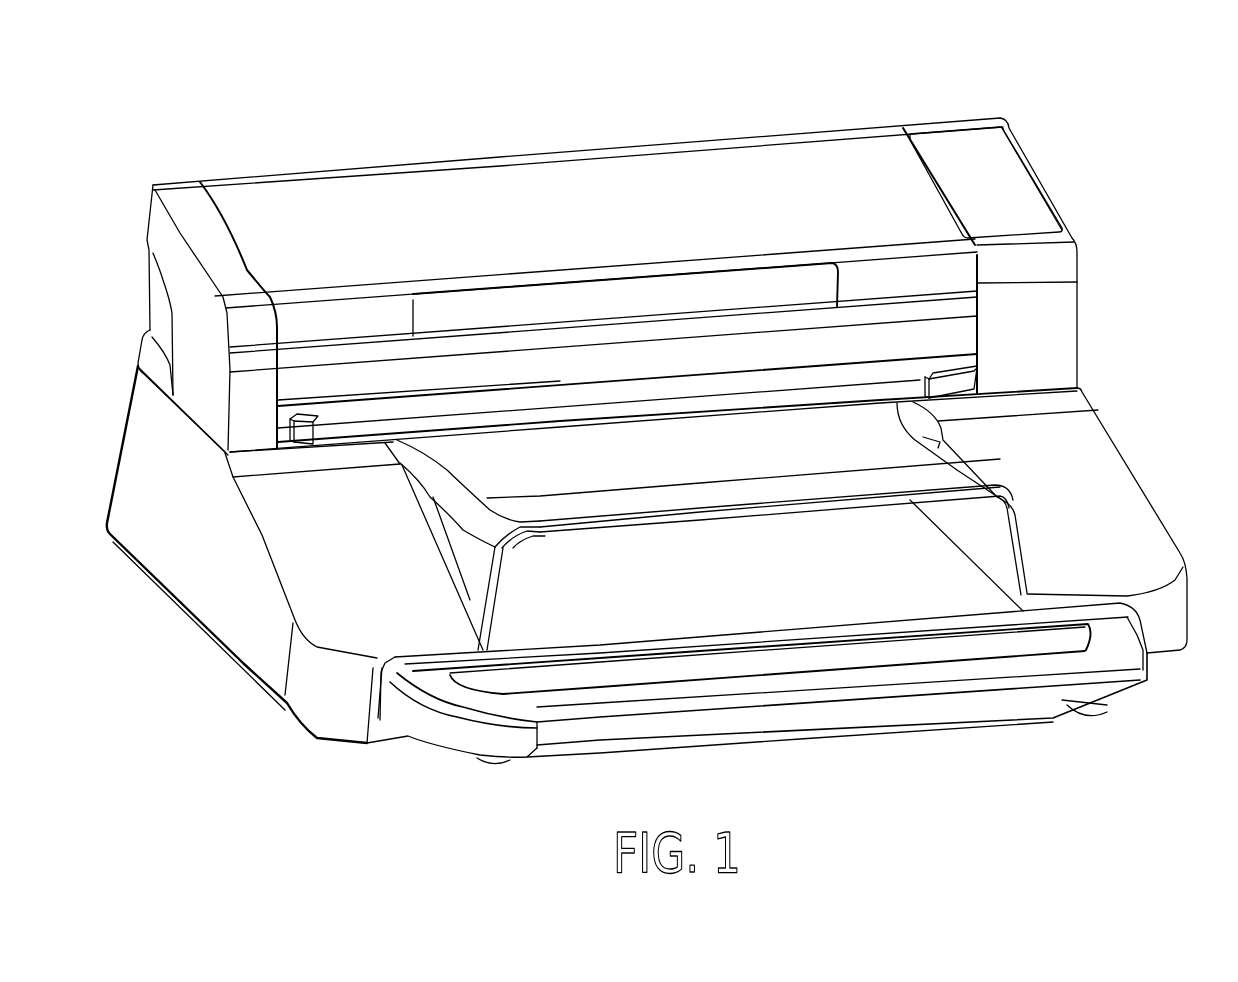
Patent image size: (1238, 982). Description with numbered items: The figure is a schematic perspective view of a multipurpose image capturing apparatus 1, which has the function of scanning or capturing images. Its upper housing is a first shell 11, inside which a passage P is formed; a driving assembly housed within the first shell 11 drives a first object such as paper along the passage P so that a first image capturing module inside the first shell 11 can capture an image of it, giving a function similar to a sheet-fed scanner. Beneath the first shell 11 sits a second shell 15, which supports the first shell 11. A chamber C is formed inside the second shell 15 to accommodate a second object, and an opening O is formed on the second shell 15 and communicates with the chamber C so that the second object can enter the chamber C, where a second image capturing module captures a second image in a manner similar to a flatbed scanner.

The multipurpose image capturing apparatus 1 is at (652, 397).
The first shell 11 is at (1016, 178).
The second shell 15 is at (1100, 450).
The passage P is at (962, 363).
The opening O is at (978, 550).
The chamber C is at (865, 575).